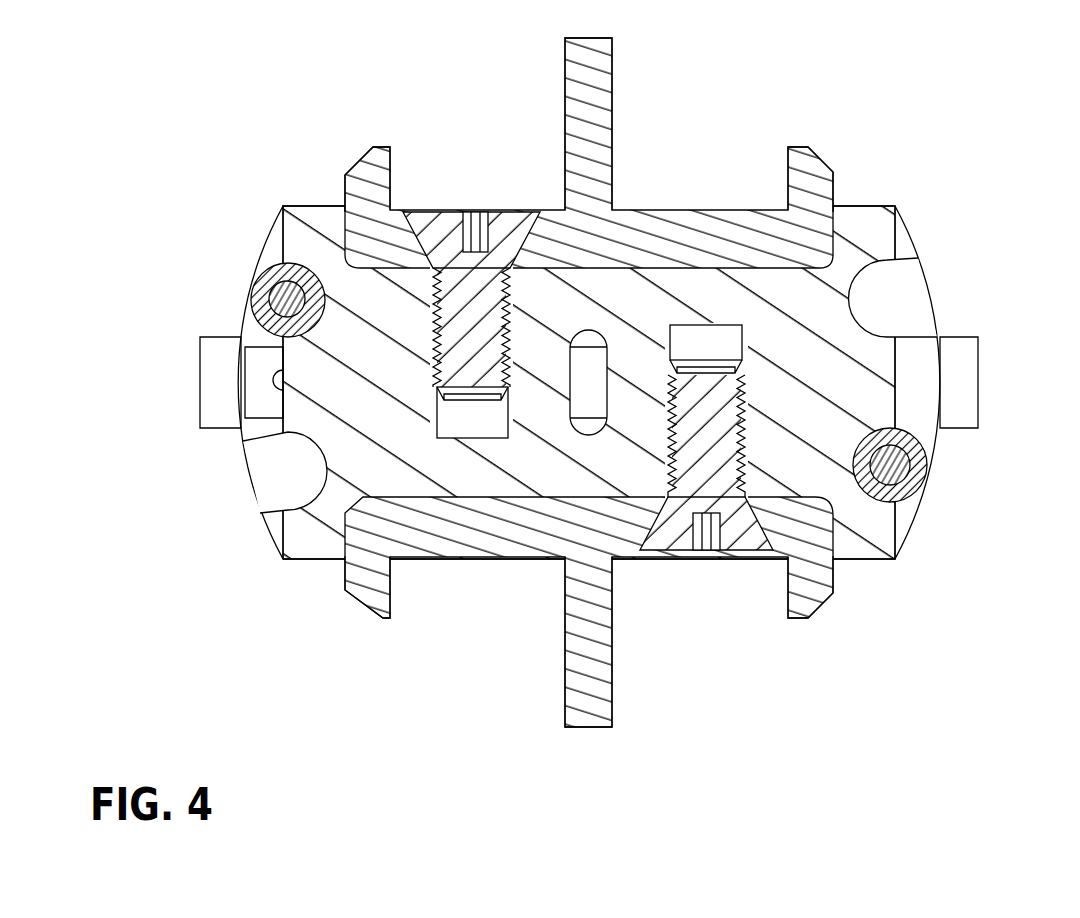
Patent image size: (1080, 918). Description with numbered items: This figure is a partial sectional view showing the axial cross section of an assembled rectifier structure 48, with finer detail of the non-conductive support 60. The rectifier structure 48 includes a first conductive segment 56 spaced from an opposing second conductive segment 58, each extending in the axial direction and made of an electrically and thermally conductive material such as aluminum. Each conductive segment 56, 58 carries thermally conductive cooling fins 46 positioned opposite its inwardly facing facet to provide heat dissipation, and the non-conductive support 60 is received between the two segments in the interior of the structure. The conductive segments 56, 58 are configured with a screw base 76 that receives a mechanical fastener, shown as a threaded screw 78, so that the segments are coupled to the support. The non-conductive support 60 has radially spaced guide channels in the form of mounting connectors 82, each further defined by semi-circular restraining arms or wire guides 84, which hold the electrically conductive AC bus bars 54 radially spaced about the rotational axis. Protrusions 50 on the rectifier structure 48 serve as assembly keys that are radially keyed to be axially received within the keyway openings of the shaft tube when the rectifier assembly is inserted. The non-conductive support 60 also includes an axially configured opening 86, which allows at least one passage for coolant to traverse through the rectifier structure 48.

The cooling fins 46 is at (377, 165).
The rectifier structure 48 is at (298, 52).
The protrusions 50 is at (208, 397).
The AC bus bar 54 is at (272, 296).
The first conductive segment 56 is at (677, 203).
The second conductive segment 58 is at (485, 566).
The non-conductive support 60 is at (875, 232).
The screw base 76 is at (415, 204).
The threaded screw 78 is at (480, 232).
The mounting connector 82 is at (254, 252).
The wire guides 84 is at (247, 316).
The opening 86 is at (579, 394).